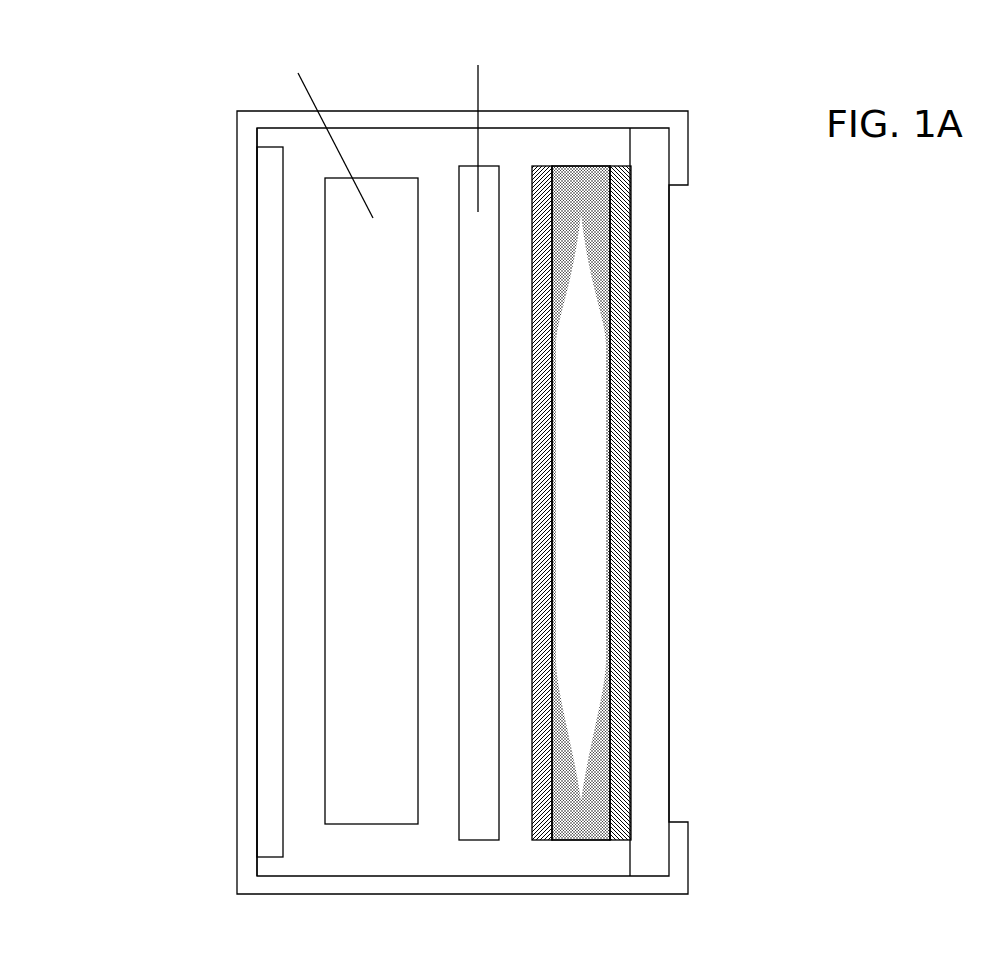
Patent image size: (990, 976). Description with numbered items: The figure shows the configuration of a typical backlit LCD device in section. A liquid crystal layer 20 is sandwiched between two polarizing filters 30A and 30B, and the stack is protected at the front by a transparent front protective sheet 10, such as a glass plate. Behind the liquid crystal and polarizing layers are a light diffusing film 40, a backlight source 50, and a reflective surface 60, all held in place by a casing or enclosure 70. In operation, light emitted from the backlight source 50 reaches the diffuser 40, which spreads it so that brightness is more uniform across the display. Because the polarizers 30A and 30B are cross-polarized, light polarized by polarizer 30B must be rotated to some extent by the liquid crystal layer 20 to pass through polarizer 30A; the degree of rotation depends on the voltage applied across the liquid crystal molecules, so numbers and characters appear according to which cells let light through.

The transparent front protective sheet 10 is at (670, 503).
The liquid crystal layer 20 is at (582, 752).
The polarizing filter 30A is at (621, 166).
The polarizing filter 30B is at (545, 166).
The light diffusing film 40 is at (478, 440).
The backlight source 50 is at (330, 423).
The reflective surface 60 is at (268, 647).
The casing or enclosure 70 is at (237, 539).